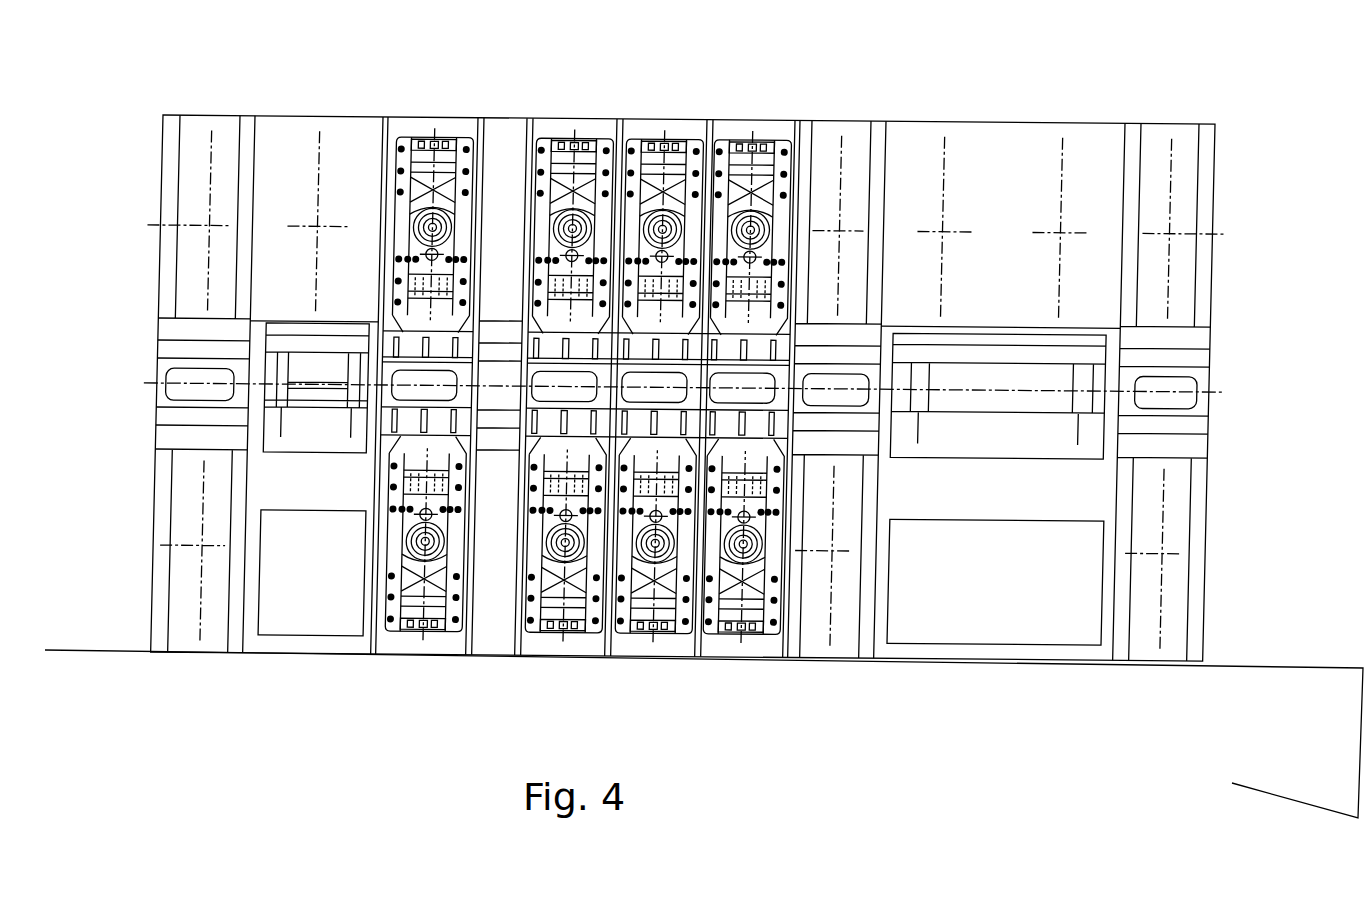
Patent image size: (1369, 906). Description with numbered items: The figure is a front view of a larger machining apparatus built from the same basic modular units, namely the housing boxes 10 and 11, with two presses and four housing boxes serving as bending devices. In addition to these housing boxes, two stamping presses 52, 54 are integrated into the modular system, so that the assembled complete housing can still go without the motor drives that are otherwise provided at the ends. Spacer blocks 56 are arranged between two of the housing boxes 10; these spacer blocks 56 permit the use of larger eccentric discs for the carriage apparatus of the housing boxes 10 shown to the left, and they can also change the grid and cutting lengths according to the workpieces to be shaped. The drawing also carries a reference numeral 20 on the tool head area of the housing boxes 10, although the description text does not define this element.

The housing box 10 is at (425, 118).
The housing box 11 is at (220, 122).
The machining head 20 is at (648, 135).
The stamping press 52 is at (1015, 135).
The stamping press 54 is at (303, 130).
The spacer block 56 is at (504, 133).